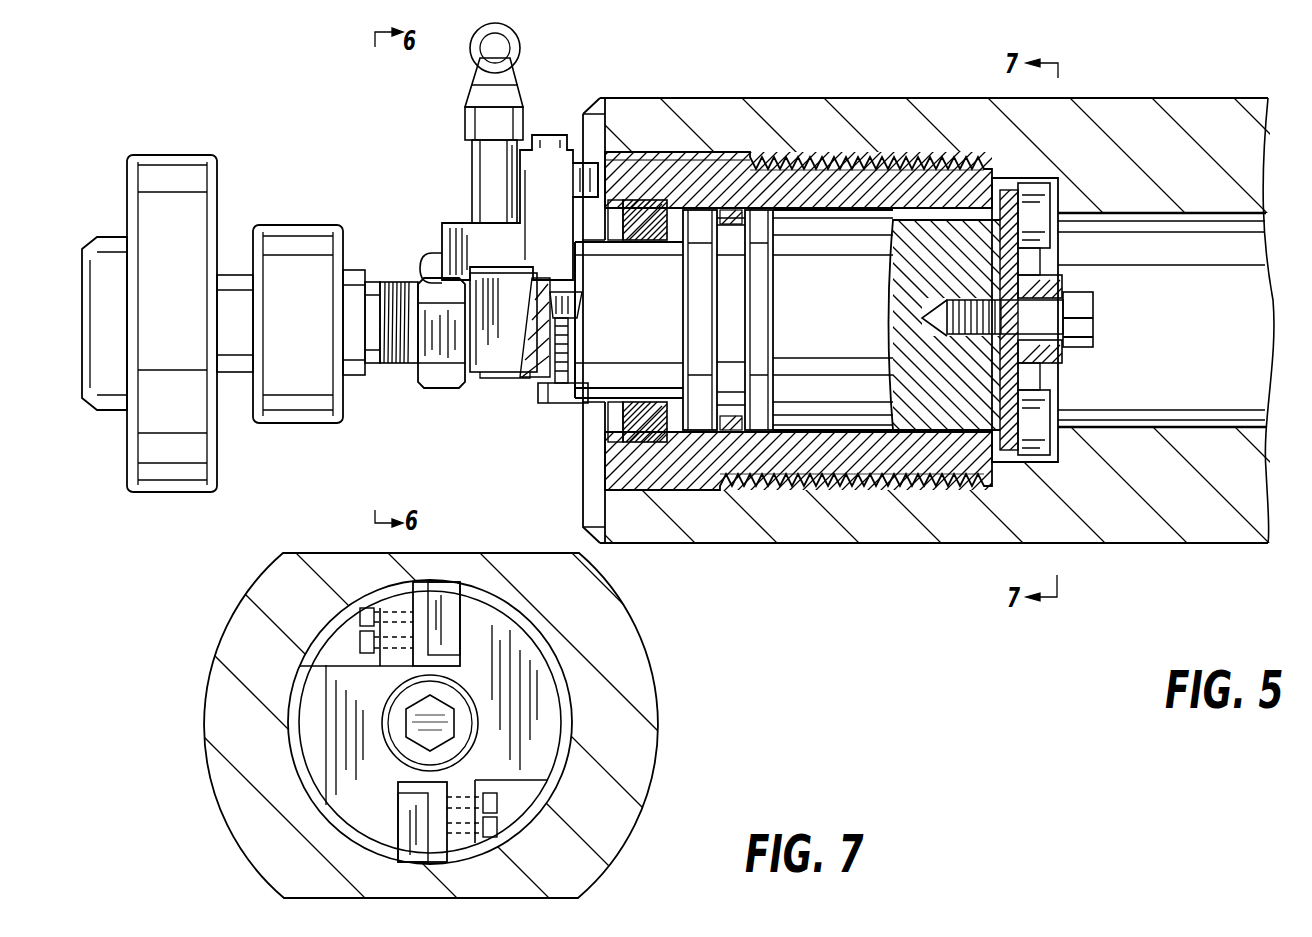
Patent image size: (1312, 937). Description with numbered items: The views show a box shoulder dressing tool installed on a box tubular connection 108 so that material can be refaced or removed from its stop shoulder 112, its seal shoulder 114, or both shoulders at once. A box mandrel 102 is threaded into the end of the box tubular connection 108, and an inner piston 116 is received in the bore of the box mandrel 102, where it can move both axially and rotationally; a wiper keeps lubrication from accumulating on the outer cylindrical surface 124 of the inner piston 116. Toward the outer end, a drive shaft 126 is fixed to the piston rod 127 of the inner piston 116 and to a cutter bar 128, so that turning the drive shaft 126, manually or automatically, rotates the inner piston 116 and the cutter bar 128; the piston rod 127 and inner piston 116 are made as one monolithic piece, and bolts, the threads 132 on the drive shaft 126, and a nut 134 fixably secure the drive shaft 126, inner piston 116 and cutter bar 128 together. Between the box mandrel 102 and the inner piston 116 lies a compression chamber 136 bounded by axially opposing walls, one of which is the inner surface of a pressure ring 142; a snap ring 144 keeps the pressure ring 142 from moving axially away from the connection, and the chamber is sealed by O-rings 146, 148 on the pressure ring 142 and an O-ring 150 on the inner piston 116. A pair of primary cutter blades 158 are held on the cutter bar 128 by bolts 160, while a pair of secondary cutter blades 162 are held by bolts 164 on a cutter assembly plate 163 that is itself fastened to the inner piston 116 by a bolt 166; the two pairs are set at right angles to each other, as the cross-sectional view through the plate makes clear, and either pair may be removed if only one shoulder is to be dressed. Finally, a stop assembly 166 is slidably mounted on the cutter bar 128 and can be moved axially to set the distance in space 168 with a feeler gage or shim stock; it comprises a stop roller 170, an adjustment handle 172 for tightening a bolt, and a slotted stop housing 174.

In FIG. 5, the box mandrel 102 is at (727, 185).
In FIG. 7, the box mandrel 102 is at (300, 672).
In FIG. 5, the box tubular connection 108 is at (1200, 130).
In FIG. 7, the box tubular connection 108 is at (625, 742).
In FIG. 5, the stop shoulder 112 is at (782, 468).
In FIG. 5, the seal shoulder 114 is at (582, 117).
In FIG. 5, the inner piston 116 is at (840, 385).
In FIG. 5, the outer cylindrical surface 124 is at (998, 462).
In FIG. 5, the drive shaft 126 is at (375, 362).
In FIG. 5, the piston rod 127 is at (695, 185).
In FIG. 5, the cutter bar 128 is at (475, 378).
In FIG. 5, the threads 132 is at (400, 280).
In FIG. 5, the nut 134 is at (432, 258).
In FIG. 5, the compression chamber 136 is at (692, 435).
In FIG. 5, the pressure ring 142 is at (642, 445).
In FIG. 5, the snap ring 144 is at (640, 200).
In FIG. 5, the O-ring 146 is at (640, 440).
In FIG. 5, the O-ring 148 is at (612, 418).
In FIG. 5, the O-ring 150 is at (785, 197).
In FIG. 5, the primary cutter blades 158 is at (530, 360).
In FIG. 5, the bolts 160 is at (558, 402).
In FIG. 5, the secondary cutter blades 162 is at (1040, 418).
In FIG. 7, the secondary cutter blades 162 is at (405, 822).
In FIG. 5, the cutter assembly plate 163 is at (1020, 267).
In FIG. 7, the cutter assembly plate 163 is at (528, 677).
In FIG. 7, the bolts 164 is at (358, 612).
In FIG. 5, the stop assembly 166 is at (771, 185).
In FIG. 7, the stop assembly 166 is at (403, 723).
In FIG. 5, the space 168 is at (612, 200).
In FIG. 5, the stop roller 170 is at (583, 177).
In FIG. 5, the adjustment handle 172 is at (497, 63).
In FIG. 5, the slotted stop housing 174 is at (467, 223).